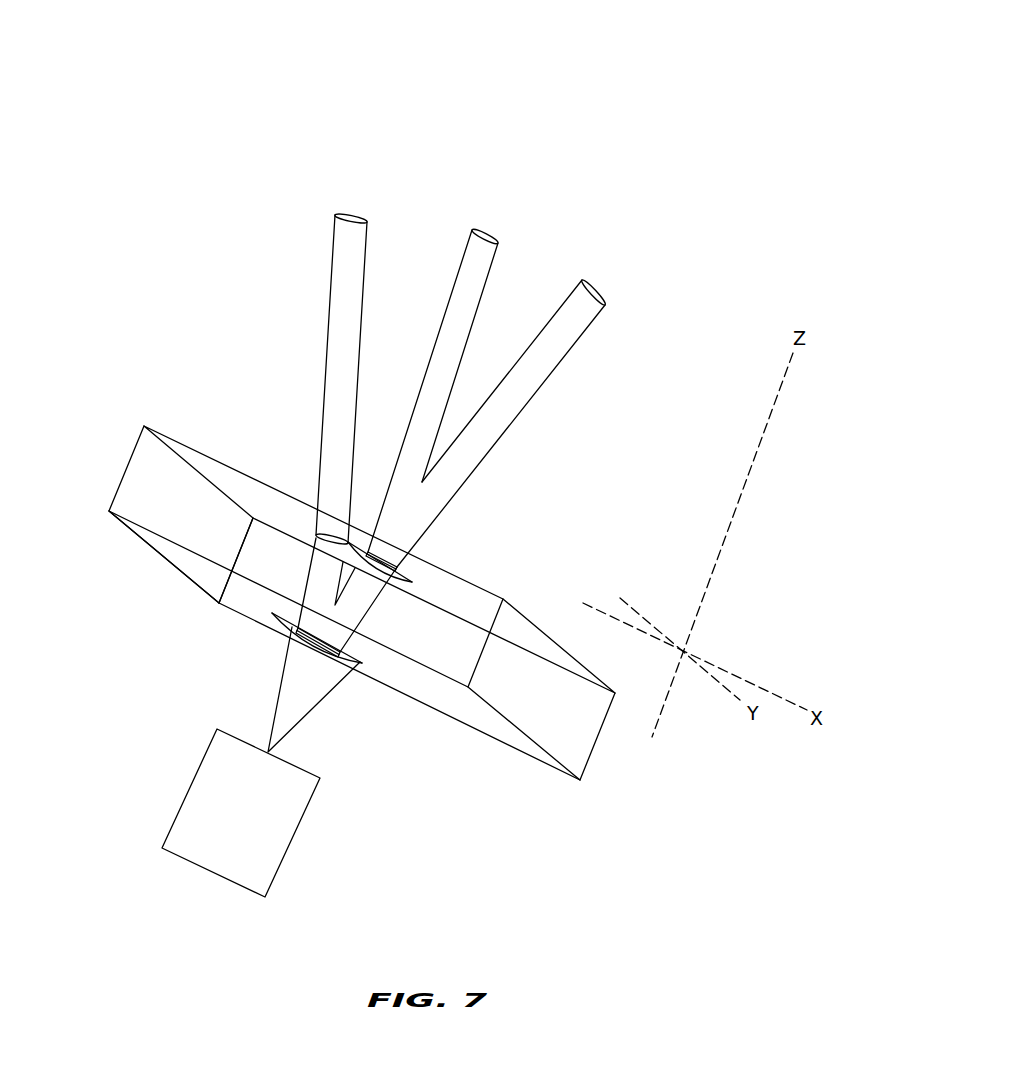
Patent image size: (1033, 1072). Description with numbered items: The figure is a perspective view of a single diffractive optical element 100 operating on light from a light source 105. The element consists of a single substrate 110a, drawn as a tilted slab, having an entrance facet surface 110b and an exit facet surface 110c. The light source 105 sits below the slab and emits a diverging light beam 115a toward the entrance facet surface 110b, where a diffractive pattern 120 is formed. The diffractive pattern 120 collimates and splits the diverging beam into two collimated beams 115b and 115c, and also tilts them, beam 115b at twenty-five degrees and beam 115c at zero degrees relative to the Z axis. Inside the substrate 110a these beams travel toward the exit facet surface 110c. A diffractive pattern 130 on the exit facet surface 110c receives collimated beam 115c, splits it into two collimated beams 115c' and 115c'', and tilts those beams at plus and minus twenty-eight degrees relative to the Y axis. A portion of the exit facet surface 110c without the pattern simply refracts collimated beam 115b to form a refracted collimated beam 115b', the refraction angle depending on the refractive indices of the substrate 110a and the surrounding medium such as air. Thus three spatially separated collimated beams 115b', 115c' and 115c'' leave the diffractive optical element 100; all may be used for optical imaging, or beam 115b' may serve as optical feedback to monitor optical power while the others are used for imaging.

The single diffractive optical element 100 is at (220, 92).
The light source 105 is at (224, 846).
The substrate 110a is at (163, 502).
The entrance facet surface 110b is at (196, 587).
The exit facet surface 110c is at (217, 452).
The diverging light beam 115a is at (278, 683).
The collimated beam 115b is at (301, 597).
The refracted collimated beam 115b' is at (299, 379).
The collimated beam 115c is at (387, 609).
The collimated beam 115c' is at (433, 389).
The collimated beam 115c'' is at (520, 422).
The diffractive pattern 120 is at (368, 665).
The diffractive pattern 130 is at (413, 582).